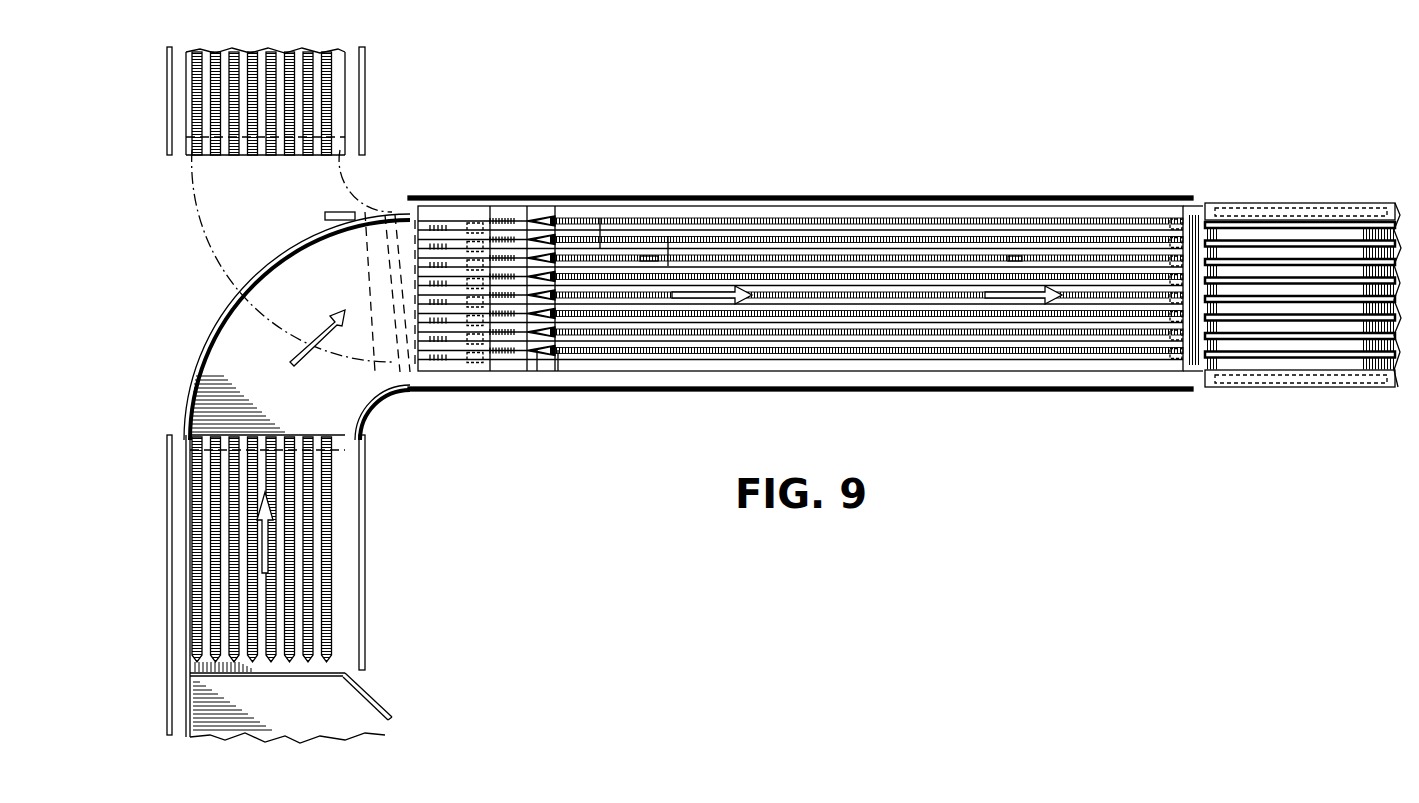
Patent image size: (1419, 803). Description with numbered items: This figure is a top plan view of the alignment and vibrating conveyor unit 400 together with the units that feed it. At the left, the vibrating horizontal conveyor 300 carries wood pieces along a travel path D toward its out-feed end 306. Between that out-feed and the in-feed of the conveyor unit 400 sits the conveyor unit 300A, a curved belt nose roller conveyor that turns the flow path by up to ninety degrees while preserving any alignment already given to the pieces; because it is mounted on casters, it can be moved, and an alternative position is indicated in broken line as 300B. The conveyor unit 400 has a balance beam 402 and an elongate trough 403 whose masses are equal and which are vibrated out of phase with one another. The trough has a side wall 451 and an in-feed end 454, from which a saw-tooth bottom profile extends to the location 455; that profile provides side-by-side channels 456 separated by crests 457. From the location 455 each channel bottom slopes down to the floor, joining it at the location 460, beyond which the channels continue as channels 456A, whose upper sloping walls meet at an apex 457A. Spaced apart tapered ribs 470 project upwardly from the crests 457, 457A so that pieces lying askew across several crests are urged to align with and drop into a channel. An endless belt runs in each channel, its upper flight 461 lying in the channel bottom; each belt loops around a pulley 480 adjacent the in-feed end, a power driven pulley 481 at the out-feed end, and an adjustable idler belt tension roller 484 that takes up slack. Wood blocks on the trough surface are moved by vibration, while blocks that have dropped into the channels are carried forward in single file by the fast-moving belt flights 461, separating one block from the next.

The conveyor 300 is at (140, 458).
The conveyor unit 300A is at (207, 340).
The broken line position of conveyor unit 300B is at (200, 233).
The out-feed end 306 is at (318, 436).
The travel path D is at (265, 545).
The in-feed end 454 is at (412, 283).
The conveyor unit 400 is at (904, 274).
The balance beam 402 is at (1080, 197).
The elongate trough 403 is at (1090, 268).
The side wall 451 is at (727, 372).
The location where channel bottoms begin sloping 455 is at (537, 355).
The channels 456 is at (508, 225).
The channels 456A is at (600, 240).
The crest 457 is at (447, 218).
The apex 457A is at (670, 240).
The location where channel bottoms join the floor 460 is at (558, 357).
The upper flight of belt 461 is at (868, 280).
The tapered ribs 470 is at (648, 262).
The pulley 480 is at (445, 218).
The power driven pulley 481 is at (1210, 228).
The adjustable idler belt tension roller 484 is at (490, 218).